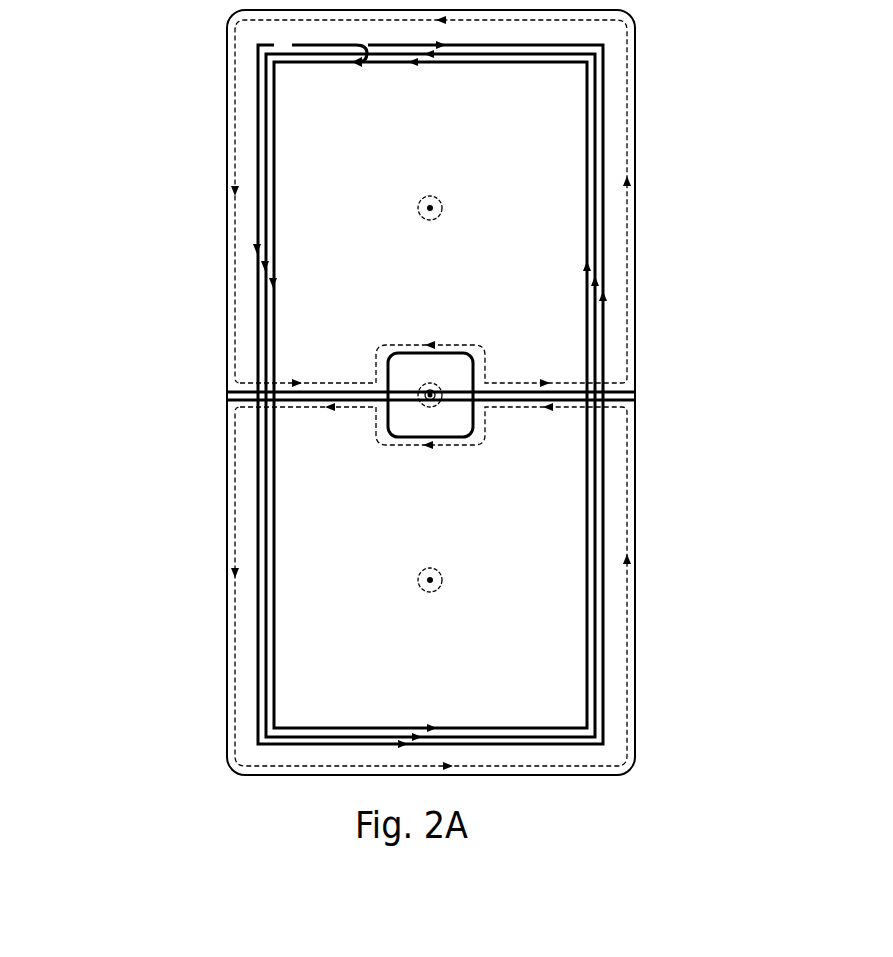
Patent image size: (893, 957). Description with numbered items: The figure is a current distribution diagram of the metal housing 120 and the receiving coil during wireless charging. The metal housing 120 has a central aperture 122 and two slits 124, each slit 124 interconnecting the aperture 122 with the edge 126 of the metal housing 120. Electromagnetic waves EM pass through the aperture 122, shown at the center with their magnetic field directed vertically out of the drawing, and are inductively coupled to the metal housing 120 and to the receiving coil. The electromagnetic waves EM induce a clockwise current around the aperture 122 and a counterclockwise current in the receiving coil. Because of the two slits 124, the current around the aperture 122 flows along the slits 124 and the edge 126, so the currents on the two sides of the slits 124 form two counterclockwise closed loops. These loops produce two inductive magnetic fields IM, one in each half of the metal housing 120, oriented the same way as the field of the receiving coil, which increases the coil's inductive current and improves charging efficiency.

The metal housing 120 is at (240, 330).
The aperture 122 is at (452, 448).
The slit 124 is at (311, 425).
The edge 126 is at (200, 673).
The inductive magnetic field IM is at (450, 208).
The electromagnetic waves EM is at (448, 365).